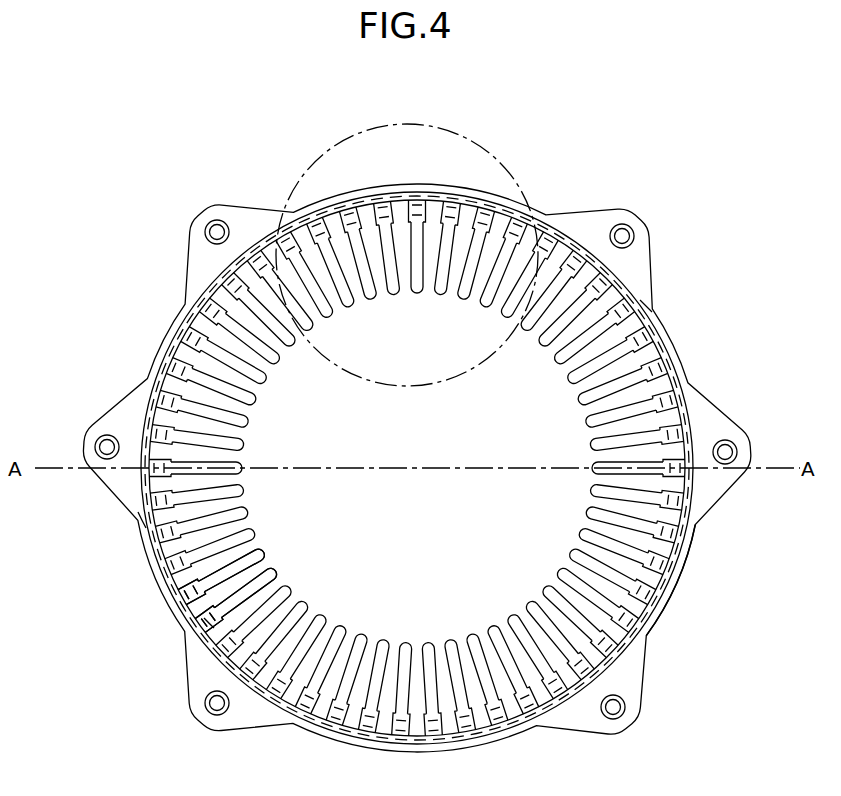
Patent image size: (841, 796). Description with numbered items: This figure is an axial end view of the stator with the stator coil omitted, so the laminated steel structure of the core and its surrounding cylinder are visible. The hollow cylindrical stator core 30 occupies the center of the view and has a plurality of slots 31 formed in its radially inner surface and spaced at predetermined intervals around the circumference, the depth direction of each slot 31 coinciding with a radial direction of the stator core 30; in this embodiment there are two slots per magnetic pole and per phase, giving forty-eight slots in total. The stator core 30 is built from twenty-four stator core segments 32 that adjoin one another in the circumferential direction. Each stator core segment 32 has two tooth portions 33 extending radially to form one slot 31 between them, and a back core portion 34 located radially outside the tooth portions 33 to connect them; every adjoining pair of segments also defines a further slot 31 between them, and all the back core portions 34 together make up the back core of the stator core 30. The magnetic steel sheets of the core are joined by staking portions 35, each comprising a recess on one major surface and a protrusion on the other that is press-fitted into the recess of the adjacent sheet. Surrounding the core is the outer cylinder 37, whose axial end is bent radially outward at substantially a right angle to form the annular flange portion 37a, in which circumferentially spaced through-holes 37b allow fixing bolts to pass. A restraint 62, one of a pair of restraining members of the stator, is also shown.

The stator core 30 is at (178, 318).
The slot 31 is at (250, 563).
The stator core segment 32 is at (428, 194).
The tooth portion 33 is at (262, 547).
The back core portion 34 is at (208, 622).
The staking portion 35 is at (142, 510).
The outer cylinder 37 is at (705, 548).
The flange portion 37a is at (680, 608).
The through-hole 37b is at (626, 707).
The restraint 62 is at (648, 308).